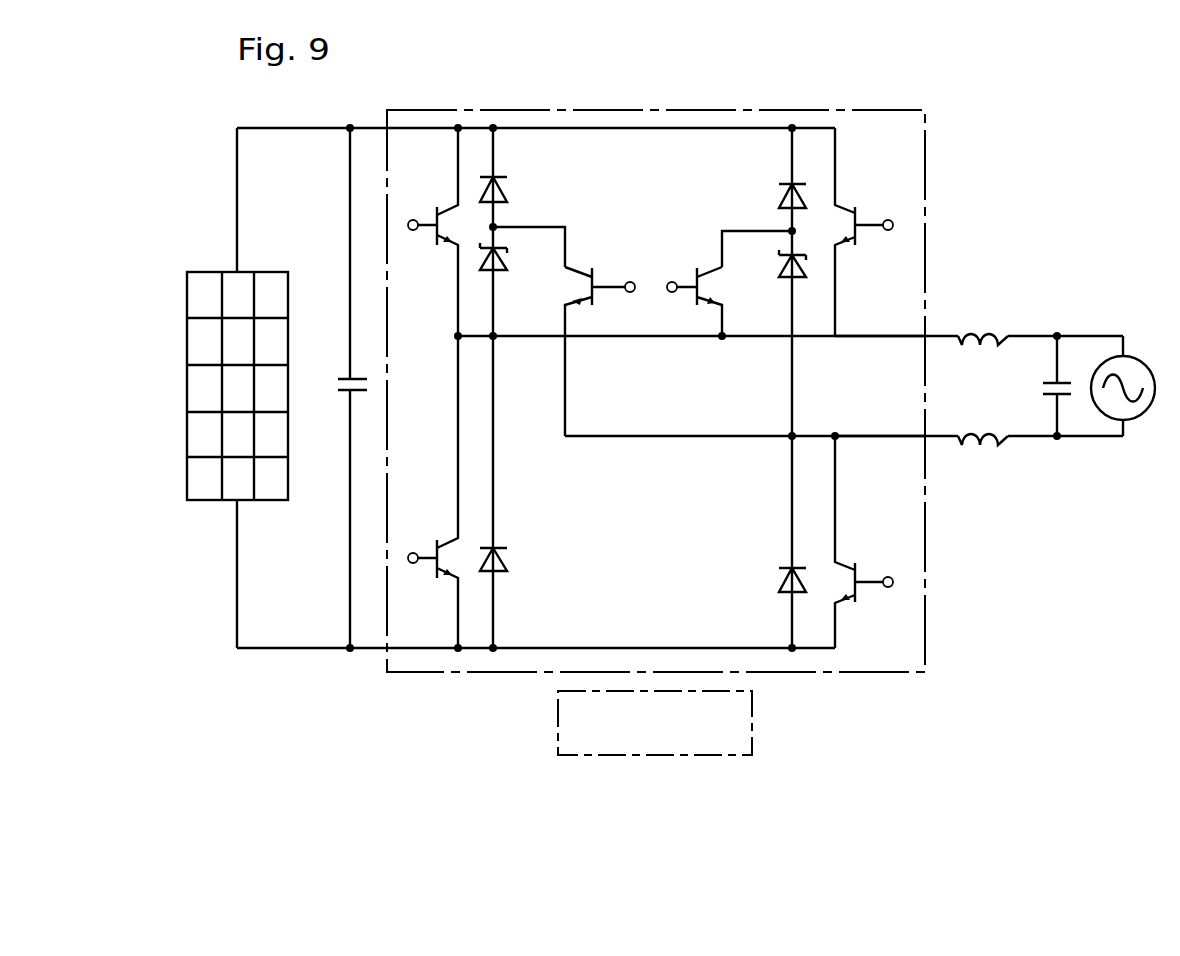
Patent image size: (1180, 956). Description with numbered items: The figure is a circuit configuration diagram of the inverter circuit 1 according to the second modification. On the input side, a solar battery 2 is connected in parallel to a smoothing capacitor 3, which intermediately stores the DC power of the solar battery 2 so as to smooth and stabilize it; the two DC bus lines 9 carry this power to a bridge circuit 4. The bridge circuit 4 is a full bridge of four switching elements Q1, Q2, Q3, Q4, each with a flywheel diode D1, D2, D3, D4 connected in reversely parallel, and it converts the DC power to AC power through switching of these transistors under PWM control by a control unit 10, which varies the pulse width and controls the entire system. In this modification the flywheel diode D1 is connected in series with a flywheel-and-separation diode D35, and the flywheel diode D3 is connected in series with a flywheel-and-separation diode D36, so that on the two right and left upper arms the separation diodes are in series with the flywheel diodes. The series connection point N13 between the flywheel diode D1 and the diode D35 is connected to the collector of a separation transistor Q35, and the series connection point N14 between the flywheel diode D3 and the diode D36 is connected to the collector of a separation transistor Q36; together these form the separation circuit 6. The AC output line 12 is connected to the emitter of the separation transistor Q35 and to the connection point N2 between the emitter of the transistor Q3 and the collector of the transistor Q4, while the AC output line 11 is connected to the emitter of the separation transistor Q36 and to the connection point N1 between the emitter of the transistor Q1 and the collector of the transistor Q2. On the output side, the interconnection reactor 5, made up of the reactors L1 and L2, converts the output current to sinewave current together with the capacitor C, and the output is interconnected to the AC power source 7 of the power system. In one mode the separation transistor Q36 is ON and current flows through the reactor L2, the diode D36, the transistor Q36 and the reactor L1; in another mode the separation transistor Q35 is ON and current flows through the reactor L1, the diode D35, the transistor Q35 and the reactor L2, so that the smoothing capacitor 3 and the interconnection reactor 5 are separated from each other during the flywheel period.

The inverter circuit 1 is at (812, 110).
The solar battery 2 is at (211, 271).
The smoothing capacitor 3 is at (348, 377).
The bridge circuit 4 is at (676, 116).
The interconnection reactor 5 is at (1020, 310).
The separation circuit 6 is at (660, 214).
The AC power source 7 is at (1136, 357).
The DC bus lines 9 is at (368, 126).
The control unit 10 is at (753, 718).
The AC output line 11 is at (855, 334).
The AC output line 12 is at (857, 434).
The switching element Q1 is at (433, 232).
The switching element Q2 is at (433, 492).
The switching element Q3 is at (864, 232).
The switching element Q4 is at (864, 542).
The separation transistor Q35 is at (600, 335).
The separation transistor Q36 is at (692, 285).
The flywheel diode D1 is at (513, 177).
The flywheel diode D2 is at (512, 492).
The flywheel diode D3 is at (771, 179).
The flywheel diode D4 is at (770, 542).
The flywheel-and-separation diode D35 is at (519, 281).
The flywheel-and-separation diode D36 is at (767, 333).
The connection point N1 is at (769, 336).
The connection point N2 is at (844, 455).
The series connection point N13 is at (497, 228).
The series connection point N14 is at (789, 230).
The interconnection reactor L1 is at (983, 319).
The interconnection reactor L2 is at (983, 458).
The capacitor C is at (1044, 386).